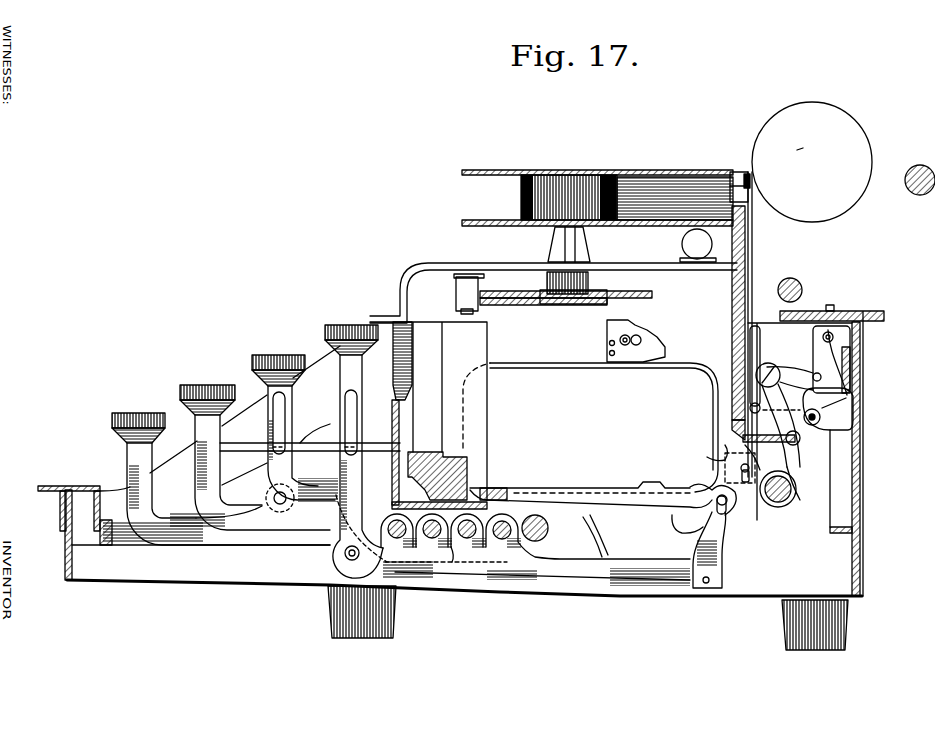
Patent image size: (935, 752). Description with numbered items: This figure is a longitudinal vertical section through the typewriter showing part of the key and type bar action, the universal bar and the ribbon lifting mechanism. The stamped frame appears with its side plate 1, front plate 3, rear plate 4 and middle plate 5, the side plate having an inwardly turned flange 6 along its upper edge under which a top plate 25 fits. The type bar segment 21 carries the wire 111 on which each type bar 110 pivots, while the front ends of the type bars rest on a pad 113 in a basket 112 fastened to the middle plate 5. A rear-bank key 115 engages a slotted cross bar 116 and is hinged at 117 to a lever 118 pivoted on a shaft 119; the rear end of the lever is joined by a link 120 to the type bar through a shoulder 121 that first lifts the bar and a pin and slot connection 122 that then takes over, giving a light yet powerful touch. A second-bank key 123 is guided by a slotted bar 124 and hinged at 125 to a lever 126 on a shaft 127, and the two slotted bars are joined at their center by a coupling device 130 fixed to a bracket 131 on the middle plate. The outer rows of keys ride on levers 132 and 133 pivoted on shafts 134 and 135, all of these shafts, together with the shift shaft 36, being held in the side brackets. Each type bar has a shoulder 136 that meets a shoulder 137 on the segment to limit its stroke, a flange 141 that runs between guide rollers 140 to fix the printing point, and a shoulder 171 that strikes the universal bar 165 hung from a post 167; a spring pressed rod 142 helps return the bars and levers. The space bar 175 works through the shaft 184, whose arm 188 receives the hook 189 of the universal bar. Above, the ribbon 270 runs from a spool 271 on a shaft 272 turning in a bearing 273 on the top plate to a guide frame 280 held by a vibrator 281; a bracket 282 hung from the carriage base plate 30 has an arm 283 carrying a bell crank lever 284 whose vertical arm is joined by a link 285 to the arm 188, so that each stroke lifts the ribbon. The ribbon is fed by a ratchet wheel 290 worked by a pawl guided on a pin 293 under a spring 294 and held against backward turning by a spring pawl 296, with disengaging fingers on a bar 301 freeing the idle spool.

The side plate 1 is at (216, 569).
The front plate 3 is at (64, 552).
The rear plate 4 is at (864, 566).
The middle plate 5 is at (412, 370).
The flange 6 is at (470, 263).
The type bar segment 21 is at (730, 312).
The top plate 25 is at (510, 264).
The base plate 30 is at (871, 311).
The shaft 36 is at (549, 531).
The type bar 110 is at (570, 489).
The wire 111 is at (744, 484).
The basket 112 is at (492, 503).
The pad 113 is at (478, 395).
The key 115 is at (345, 325).
The slotted cross bar 116 is at (352, 447).
The hinge 117 is at (328, 568).
The lever 118 is at (584, 584).
The shaft 119 is at (507, 542).
The link 120 is at (715, 552).
The shoulder 121 is at (670, 518).
The pin and slot connection 122 is at (719, 494).
The key 123 is at (270, 357).
The slotted bar 124 is at (271, 446).
The hinge 125 is at (273, 498).
The lever 126 is at (458, 548).
The shaft 127 is at (468, 540).
The coupling device 130 is at (306, 444).
The bracket 131 is at (380, 448).
The lever 132 is at (242, 524).
The lever 133 is at (127, 459).
The shaft 134 is at (430, 540).
The shaft 135 is at (398, 540).
The shoulder 136 is at (627, 486).
The shoulder 137 is at (732, 364).
The guide rollers 140 is at (730, 180).
The flange 141 is at (468, 463).
The spring pressed rod 142 is at (607, 534).
The universal bar 165 is at (742, 438).
The post 167 is at (846, 311).
The shoulder 171 is at (707, 457).
The space bar 175 is at (42, 487).
The shaft 184 is at (795, 494).
The arm 188 is at (792, 462).
The hook 189 is at (800, 440).
The ribbon 270 is at (688, 186).
The spool 271 is at (505, 170).
The shaft 272 is at (575, 174).
The bearing 273 is at (588, 250).
The frame 280 is at (747, 173).
The vibrator 281 is at (751, 245).
The bracket 282 is at (849, 352).
The arm 283 is at (838, 420).
The bell crank lever 284 is at (840, 404).
The link 285 is at (792, 368).
The ratchet wheel 290 is at (652, 296).
The pin 293 is at (624, 345).
The spring 294 is at (637, 345).
The spring pawl 296 is at (526, 306).
The bar 301 is at (754, 283).